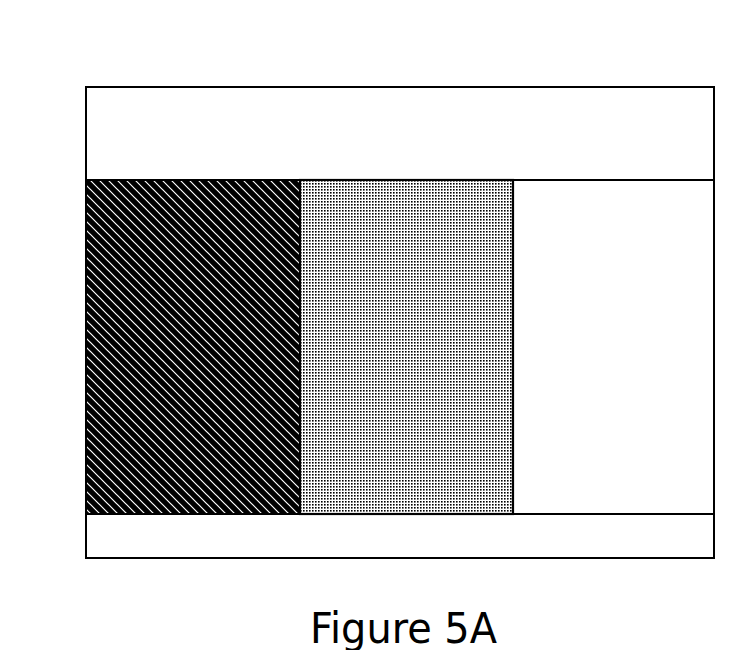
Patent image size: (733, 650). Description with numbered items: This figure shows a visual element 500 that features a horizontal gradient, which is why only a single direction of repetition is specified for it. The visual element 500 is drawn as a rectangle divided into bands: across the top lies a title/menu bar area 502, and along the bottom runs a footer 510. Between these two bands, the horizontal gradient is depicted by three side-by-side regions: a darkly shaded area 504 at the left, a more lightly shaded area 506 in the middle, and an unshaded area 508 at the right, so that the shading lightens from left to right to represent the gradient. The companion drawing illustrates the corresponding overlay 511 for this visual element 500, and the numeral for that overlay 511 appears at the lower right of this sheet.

The visual element 500 is at (271, 87).
The title/menu bar area 502 is at (443, 143).
The shaded area 504 is at (86, 245).
The shaded area 506 is at (495, 202).
The unshaded area 508 is at (632, 443).
The footer 510 is at (538, 547).
The overlay 511 is at (685, 639).